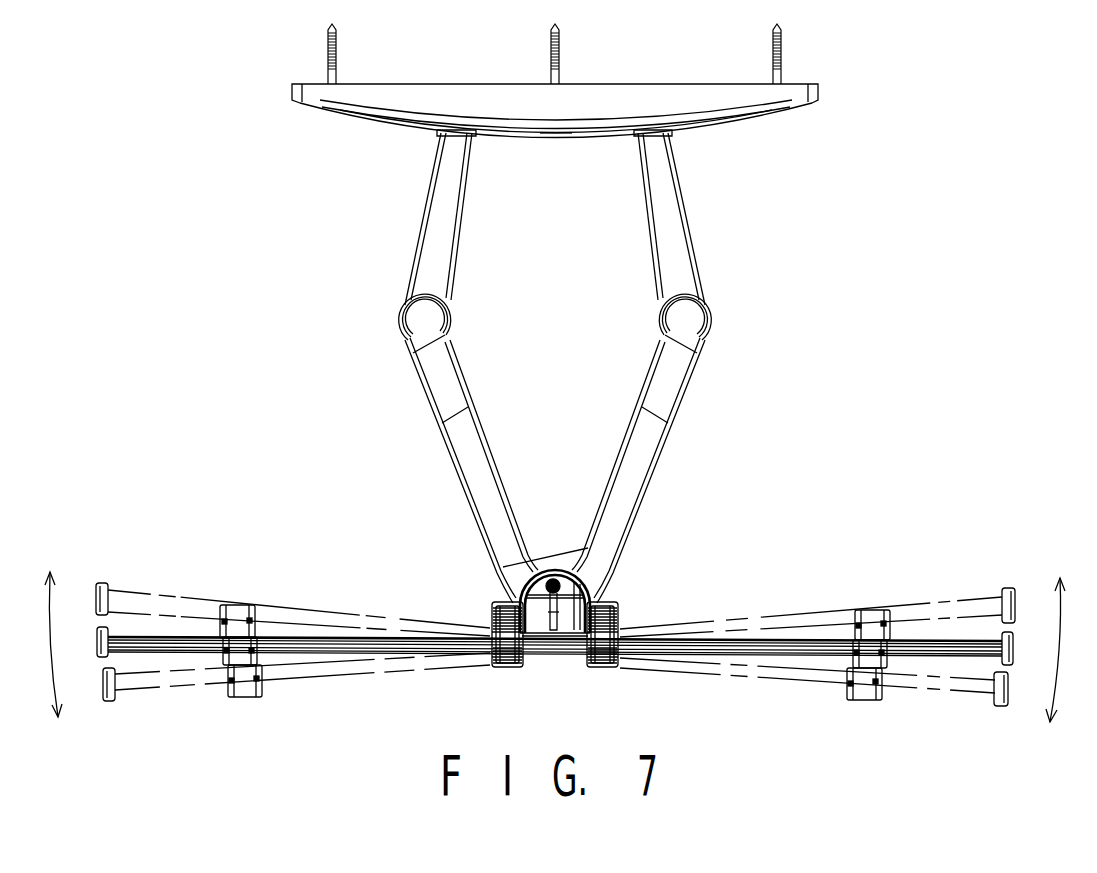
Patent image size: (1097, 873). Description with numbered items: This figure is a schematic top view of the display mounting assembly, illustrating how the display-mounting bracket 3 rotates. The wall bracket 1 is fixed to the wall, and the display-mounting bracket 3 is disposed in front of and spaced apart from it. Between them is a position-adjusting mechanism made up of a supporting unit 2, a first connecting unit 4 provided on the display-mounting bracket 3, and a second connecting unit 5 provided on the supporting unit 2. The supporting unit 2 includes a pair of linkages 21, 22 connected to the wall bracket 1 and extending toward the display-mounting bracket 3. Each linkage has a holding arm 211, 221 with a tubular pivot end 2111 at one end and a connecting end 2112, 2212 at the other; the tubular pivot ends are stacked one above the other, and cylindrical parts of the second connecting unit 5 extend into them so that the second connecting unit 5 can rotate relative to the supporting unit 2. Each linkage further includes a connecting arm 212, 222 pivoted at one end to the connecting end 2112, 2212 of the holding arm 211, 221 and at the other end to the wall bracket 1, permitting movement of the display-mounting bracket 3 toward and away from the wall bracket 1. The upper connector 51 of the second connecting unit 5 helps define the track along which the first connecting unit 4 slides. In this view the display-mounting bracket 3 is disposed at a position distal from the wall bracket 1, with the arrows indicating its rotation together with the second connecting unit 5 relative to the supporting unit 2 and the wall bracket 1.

The wall bracket 1 is at (258, 93).
The supporting unit 2 is at (578, 380).
The linkage 21 is at (652, 380).
The holding arm 211 is at (658, 468).
The tubular pivot end 2111 is at (572, 608).
The connecting arm 212 is at (687, 243).
The connecting end 2112 is at (690, 330).
The linkage 22 is at (420, 366).
The holding arm 221 is at (454, 463).
The connecting arm 222 is at (445, 227).
The connecting end 2212 is at (420, 325).
The display-mounting bracket 3 is at (107, 560).
The first connecting unit 4 is at (600, 672).
The second connecting unit 5 is at (561, 579).
The upper connector 51 is at (520, 573).